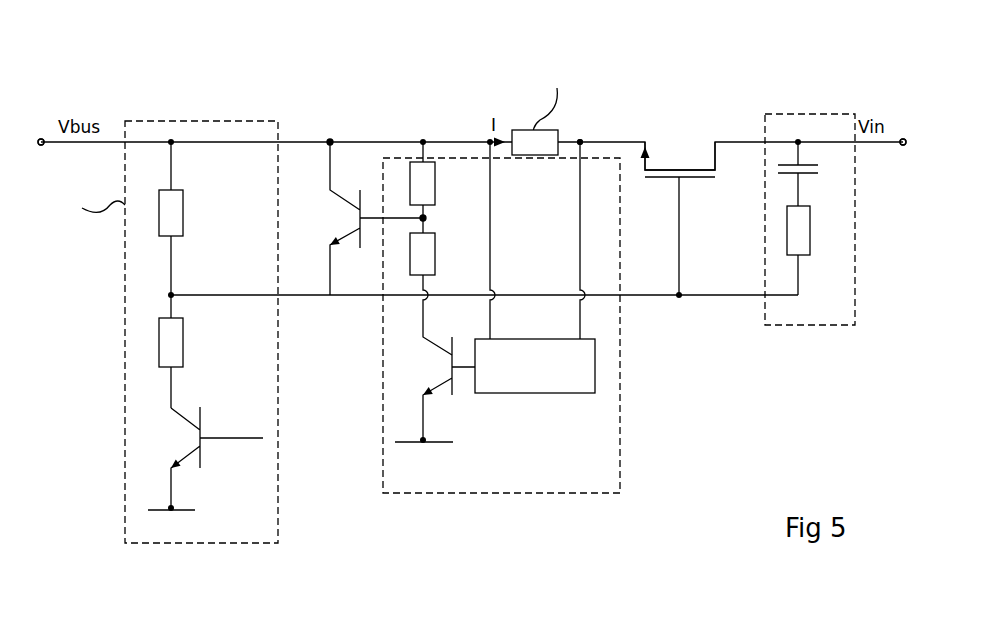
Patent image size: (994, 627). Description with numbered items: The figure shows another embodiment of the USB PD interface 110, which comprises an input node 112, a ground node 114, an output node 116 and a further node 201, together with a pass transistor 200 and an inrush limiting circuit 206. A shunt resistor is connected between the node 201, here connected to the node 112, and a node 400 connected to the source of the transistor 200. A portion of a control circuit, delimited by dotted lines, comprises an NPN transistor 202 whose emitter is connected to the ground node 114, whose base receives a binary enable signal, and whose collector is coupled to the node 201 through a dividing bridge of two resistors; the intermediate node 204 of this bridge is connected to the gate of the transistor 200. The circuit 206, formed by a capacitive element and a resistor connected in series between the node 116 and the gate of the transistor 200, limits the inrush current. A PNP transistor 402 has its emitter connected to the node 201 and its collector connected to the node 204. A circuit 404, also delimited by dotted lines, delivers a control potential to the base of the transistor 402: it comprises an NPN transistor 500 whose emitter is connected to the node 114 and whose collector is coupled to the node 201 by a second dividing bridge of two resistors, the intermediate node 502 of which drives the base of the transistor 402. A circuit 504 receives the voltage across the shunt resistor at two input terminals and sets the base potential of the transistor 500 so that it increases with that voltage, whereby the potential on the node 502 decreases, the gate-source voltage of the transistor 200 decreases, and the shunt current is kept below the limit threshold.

The interface 110 is at (178, 56).
The node 112 is at (41, 140).
The node 114 is at (171, 508).
The node 116 is at (903, 140).
The transistor 200 is at (676, 158).
The node 201 is at (330, 140).
The NPN transistor 202 is at (180, 436).
The intermediate node 204 is at (171, 295).
The circuit 206 is at (855, 235).
The node 400 is at (580, 140).
The PNP transistor 402 is at (355, 218).
The circuit 404 is at (620, 438).
The NPN transistor 500 is at (445, 368).
The intermediate node 502 is at (425, 218).
The circuit 504 is at (555, 381).